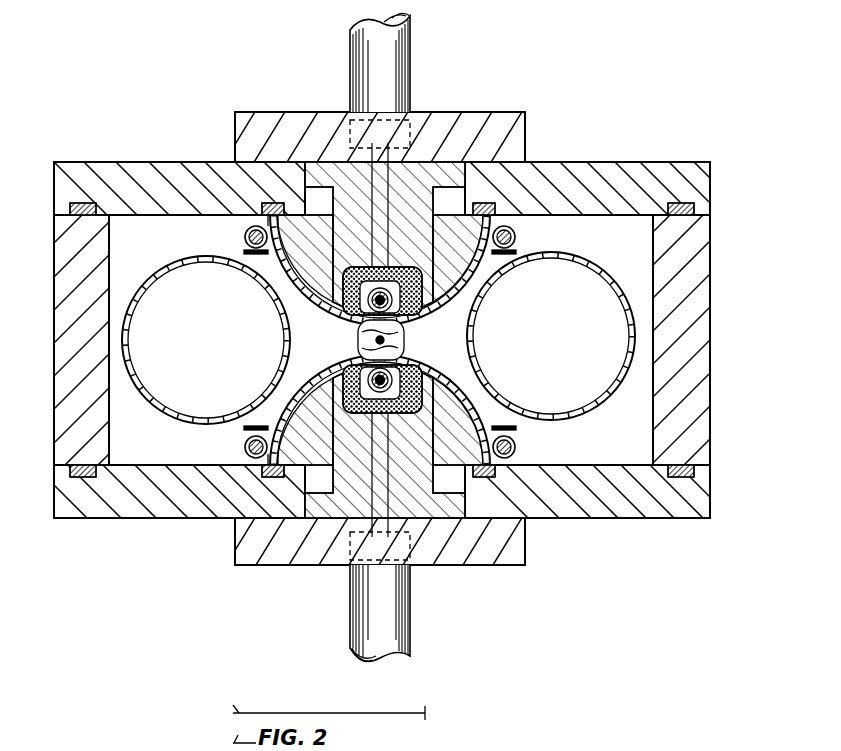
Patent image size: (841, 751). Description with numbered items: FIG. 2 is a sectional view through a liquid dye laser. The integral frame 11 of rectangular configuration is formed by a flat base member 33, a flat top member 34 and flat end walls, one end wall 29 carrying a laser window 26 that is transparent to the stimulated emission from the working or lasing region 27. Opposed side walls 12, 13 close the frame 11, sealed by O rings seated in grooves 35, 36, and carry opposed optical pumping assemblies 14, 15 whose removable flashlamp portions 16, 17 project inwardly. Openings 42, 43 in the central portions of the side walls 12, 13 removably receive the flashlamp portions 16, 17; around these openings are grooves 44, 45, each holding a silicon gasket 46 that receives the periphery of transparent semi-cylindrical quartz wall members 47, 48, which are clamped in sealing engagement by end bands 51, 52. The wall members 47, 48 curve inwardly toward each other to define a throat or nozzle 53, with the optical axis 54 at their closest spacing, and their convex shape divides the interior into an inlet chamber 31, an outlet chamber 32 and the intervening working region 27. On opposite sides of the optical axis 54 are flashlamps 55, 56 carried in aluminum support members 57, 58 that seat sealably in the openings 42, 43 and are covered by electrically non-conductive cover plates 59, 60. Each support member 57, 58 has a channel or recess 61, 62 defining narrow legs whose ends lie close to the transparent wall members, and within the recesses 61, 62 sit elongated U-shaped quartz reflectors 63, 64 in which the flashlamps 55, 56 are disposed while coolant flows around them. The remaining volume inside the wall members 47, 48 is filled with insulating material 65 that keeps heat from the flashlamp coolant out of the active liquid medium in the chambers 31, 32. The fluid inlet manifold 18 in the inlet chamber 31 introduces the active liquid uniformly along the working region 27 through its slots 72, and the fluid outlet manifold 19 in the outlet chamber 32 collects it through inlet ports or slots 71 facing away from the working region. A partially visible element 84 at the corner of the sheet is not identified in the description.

The integral frame 11 is at (768, 438).
The side wall 12 is at (710, 491).
The side wall 13 is at (710, 185).
The optical pumping assembly 14 is at (232, 438).
The optical pumping assembly 15 is at (518, 238).
The removable flashlamp portion 16 is at (296, 594).
The removable flashlamp portion 17 is at (279, 82).
The fluid inlet manifold 18 is at (622, 310).
The fluid outlet manifold 19 is at (128, 318).
The laser window 26 is at (358, 334).
The working or lasing region 27 is at (358, 346).
The end wall 29 is at (126, 226).
The inlet chamber 31 is at (620, 456).
The outlet chamber 32 is at (147, 430).
The flat base member 33 is at (710, 328).
The flat top member 34 is at (54, 341).
The groove 35 is at (74, 460).
The groove 36 is at (70, 217).
The opening 42 is at (464, 493).
The opening 43 is at (303, 176).
The groove 44 is at (502, 480).
The groove 45 is at (496, 214).
The silicon gasket 46 is at (262, 206).
The transparent semi-cylindrical wall member 47 is at (486, 404).
The transparent semi-cylindrical wall member 48 is at (458, 258).
The clamping end band 51 is at (520, 452).
The clamping end band 52 is at (240, 236).
The throat or nozzle 53 is at (406, 346).
The optical axis 54 is at (410, 334).
The flashlamp 55 is at (320, 421).
The flashlamp 56 is at (398, 268).
The support member 57 is at (418, 522).
The support member 58 is at (340, 150).
The cover plate 59 is at (527, 550).
The cover plate 60 is at (455, 112).
The channel or recess 61 is at (458, 421).
The channel or recess 62 is at (305, 258).
The U-shaped reflector 63 is at (382, 418).
The U-shaped reflector 64 is at (372, 252).
The insulating material 65 is at (278, 304).
The inlet ports or slots 71 is at (582, 276).
The left roller surface 72 is at (174, 256).
The adjacent figure element 84 is at (784, 750).